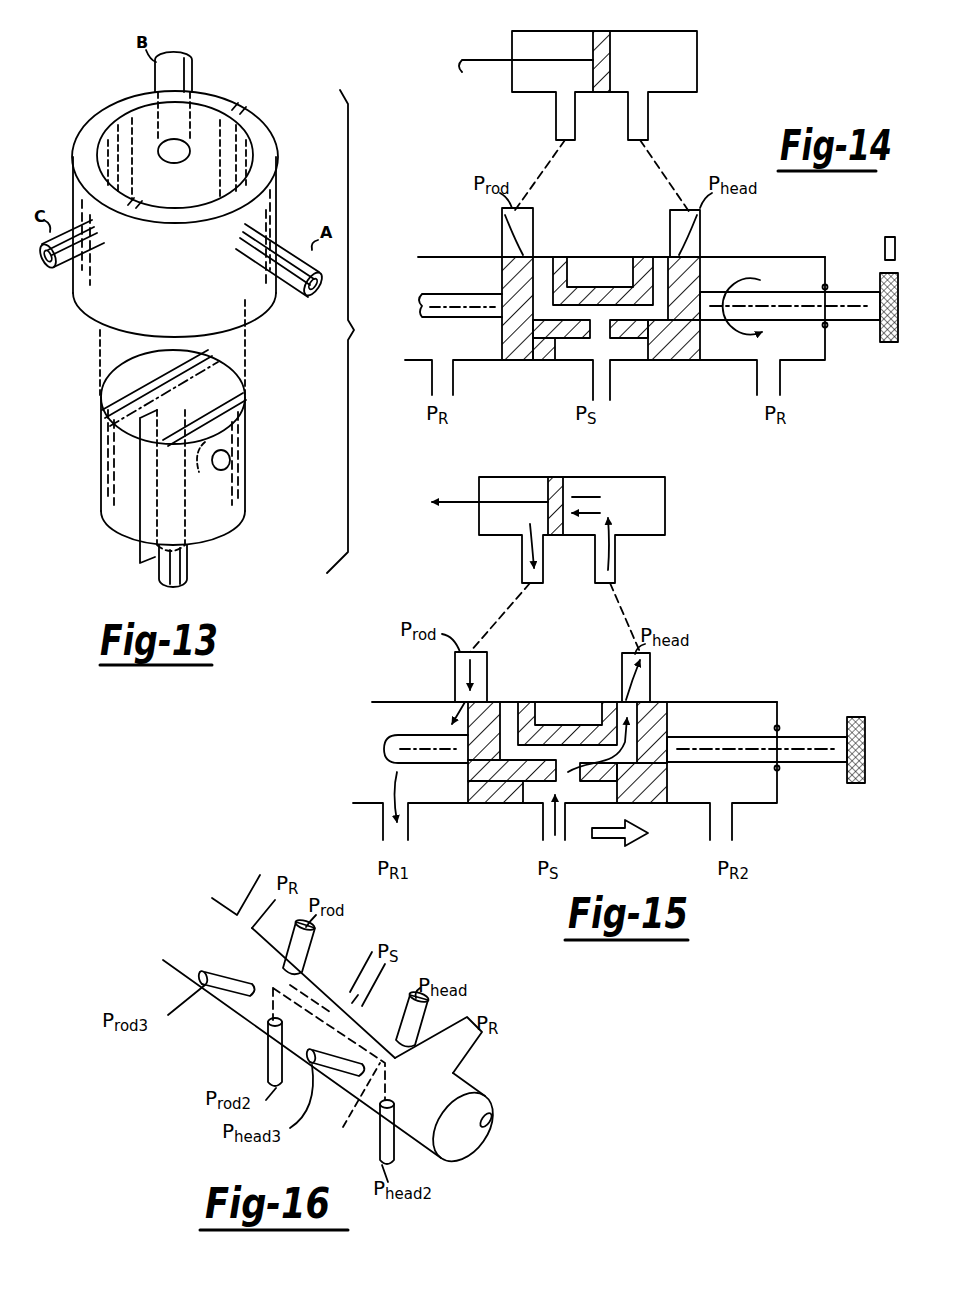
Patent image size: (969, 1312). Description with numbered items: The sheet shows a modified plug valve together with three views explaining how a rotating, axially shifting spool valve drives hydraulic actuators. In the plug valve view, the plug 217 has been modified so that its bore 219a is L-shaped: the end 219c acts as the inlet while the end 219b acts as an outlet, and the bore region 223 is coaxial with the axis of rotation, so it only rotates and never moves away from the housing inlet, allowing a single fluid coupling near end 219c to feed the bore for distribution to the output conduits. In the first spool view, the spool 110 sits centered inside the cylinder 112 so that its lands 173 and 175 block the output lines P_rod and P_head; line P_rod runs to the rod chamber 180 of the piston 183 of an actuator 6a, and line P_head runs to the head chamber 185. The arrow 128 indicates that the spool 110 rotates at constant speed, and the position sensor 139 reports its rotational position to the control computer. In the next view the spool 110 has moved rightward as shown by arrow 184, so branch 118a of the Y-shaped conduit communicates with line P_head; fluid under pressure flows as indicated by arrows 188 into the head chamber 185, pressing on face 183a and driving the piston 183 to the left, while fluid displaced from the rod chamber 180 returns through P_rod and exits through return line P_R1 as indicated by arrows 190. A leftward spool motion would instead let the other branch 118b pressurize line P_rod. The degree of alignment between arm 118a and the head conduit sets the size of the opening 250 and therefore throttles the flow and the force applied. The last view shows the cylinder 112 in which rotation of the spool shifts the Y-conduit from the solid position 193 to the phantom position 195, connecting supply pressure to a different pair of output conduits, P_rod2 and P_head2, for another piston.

In FIG. 13, the plug 217 is at (222, 516).
In FIG. 13, the bore 219a is at (248, 404).
In FIG. 13, the bore end 219b is at (242, 478).
In FIG. 13, the bore end 219c is at (187, 572).
In FIG. 13, the bore region 223 is at (140, 497).
In FIG. 14, the rod chamber 180 is at (530, 42).
In FIG. 15, the rod chamber 180 is at (500, 482).
In FIG. 14, the piston 183 is at (636, 12).
In FIG. 15, the piston 183 is at (555, 480).
In FIG. 15, the piston face 183a is at (568, 477).
In FIG. 14, the head chamber 185 is at (697, 62).
In FIG. 15, the head chamber 185 is at (648, 502).
In FIG. 14, the actuator 6a is at (660, 0).
In FIG. 14, the position sensor 139 is at (894, 237).
In FIG. 14, the land 173 is at (502, 222).
In FIG. 14, the land 175 is at (700, 226).
In FIG. 14, the arrow indicating rotation of spool 128 is at (746, 287).
In FIG. 14, the spool 110 is at (683, 352).
In FIG. 15, the arrows indicating return flow 190 is at (525, 566).
In FIG. 15, the arrows indicating supply flow 188 is at (613, 554).
In FIG. 15, the branch of Y-shaped conduit 118b is at (510, 712).
In FIG. 15, the branch of Y-shaped conduit 118a is at (660, 706).
In FIG. 15, the opening 250 is at (632, 700).
In FIG. 15, the cylinder 112 is at (360, 802).
In FIG. 16, the cylinder 112 is at (497, 1116).
In FIG. 15, the arrow indicating spool motion 184 is at (620, 838).
In FIG. 16, the solid position of Y-conduit 193 is at (303, 962).
In FIG. 16, the phantom position of Y-conduit 195 is at (346, 1106).